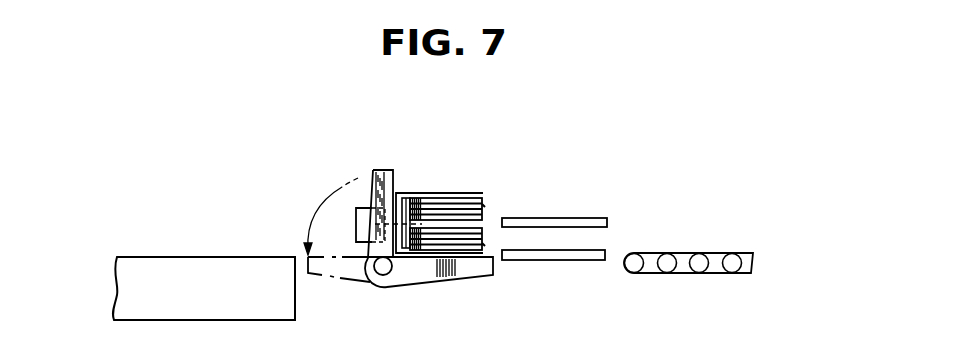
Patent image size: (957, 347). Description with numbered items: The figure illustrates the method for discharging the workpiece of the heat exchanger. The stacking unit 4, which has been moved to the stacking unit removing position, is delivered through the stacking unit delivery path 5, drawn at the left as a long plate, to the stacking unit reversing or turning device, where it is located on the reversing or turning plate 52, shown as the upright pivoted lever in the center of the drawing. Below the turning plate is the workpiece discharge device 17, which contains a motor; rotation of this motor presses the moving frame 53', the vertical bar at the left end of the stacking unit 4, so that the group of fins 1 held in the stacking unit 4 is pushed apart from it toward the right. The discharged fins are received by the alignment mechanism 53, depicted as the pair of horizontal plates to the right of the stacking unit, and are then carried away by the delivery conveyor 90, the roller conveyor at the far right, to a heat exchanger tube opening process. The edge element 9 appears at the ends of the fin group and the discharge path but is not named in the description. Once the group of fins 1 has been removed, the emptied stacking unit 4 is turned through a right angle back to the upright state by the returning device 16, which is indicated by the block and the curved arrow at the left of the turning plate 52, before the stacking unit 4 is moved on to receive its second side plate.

The stacking unit delivery path 5 is at (207, 257).
The returning device 16 is at (356, 224).
The reversing or turning plate 52 is at (379, 172).
The workpiece discharge device 17 is at (386, 272).
The stacking unit 4 is at (462, 194).
The moving frame 53' is at (398, 182).
The group of fins 1 is at (437, 200).
The guide edge 9 is at (484, 206).
The alignment mechanism 53 is at (562, 242).
The delivery conveyor 90 is at (683, 253).